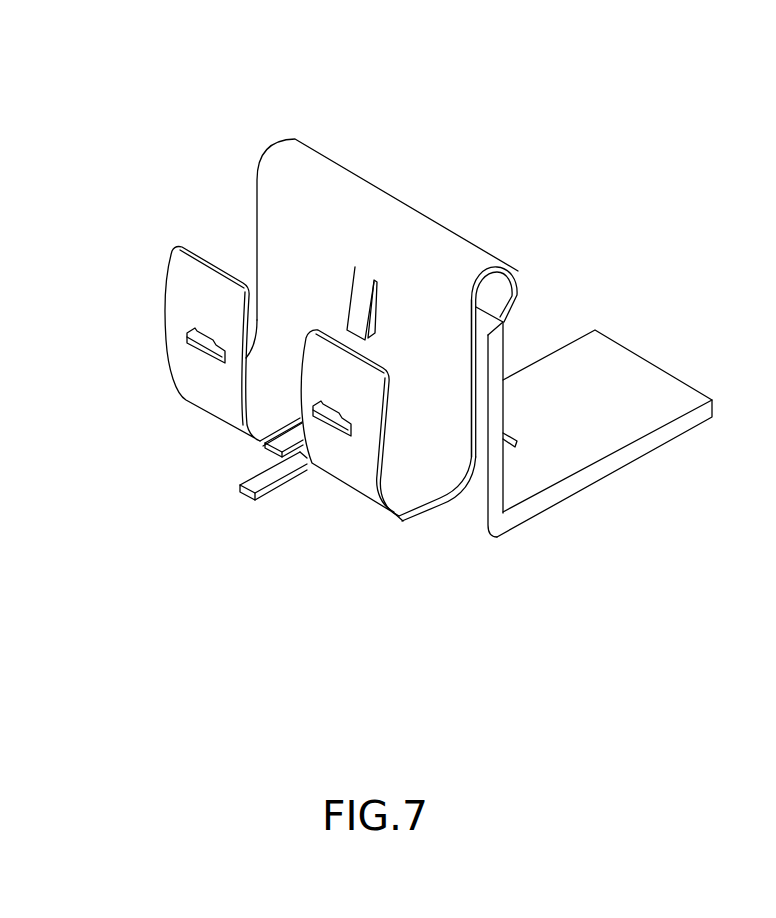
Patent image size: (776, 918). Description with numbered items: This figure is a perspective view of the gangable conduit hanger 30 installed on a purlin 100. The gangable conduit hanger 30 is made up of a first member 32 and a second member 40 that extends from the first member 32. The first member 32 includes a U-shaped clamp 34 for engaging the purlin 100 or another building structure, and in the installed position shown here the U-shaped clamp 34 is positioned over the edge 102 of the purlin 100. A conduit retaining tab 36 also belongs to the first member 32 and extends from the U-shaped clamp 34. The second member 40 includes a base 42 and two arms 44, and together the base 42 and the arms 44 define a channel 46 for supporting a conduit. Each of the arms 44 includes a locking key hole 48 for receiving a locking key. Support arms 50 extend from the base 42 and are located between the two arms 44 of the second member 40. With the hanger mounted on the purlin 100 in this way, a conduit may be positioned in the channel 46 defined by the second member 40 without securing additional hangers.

The gangable conduit hanger 30 is at (397, 107).
The first member 32 is at (435, 217).
The U-shaped clamp 34 is at (477, 240).
The conduit retaining tab 36 is at (357, 310).
The second member 40 is at (408, 518).
The base 42 is at (420, 468).
The arms 44 is at (355, 467).
The channel 46 is at (393, 478).
The locking key hole 48 is at (205, 338).
The support arms 50 is at (257, 490).
The purlin 100 is at (627, 383).
The edge 102 is at (490, 321).